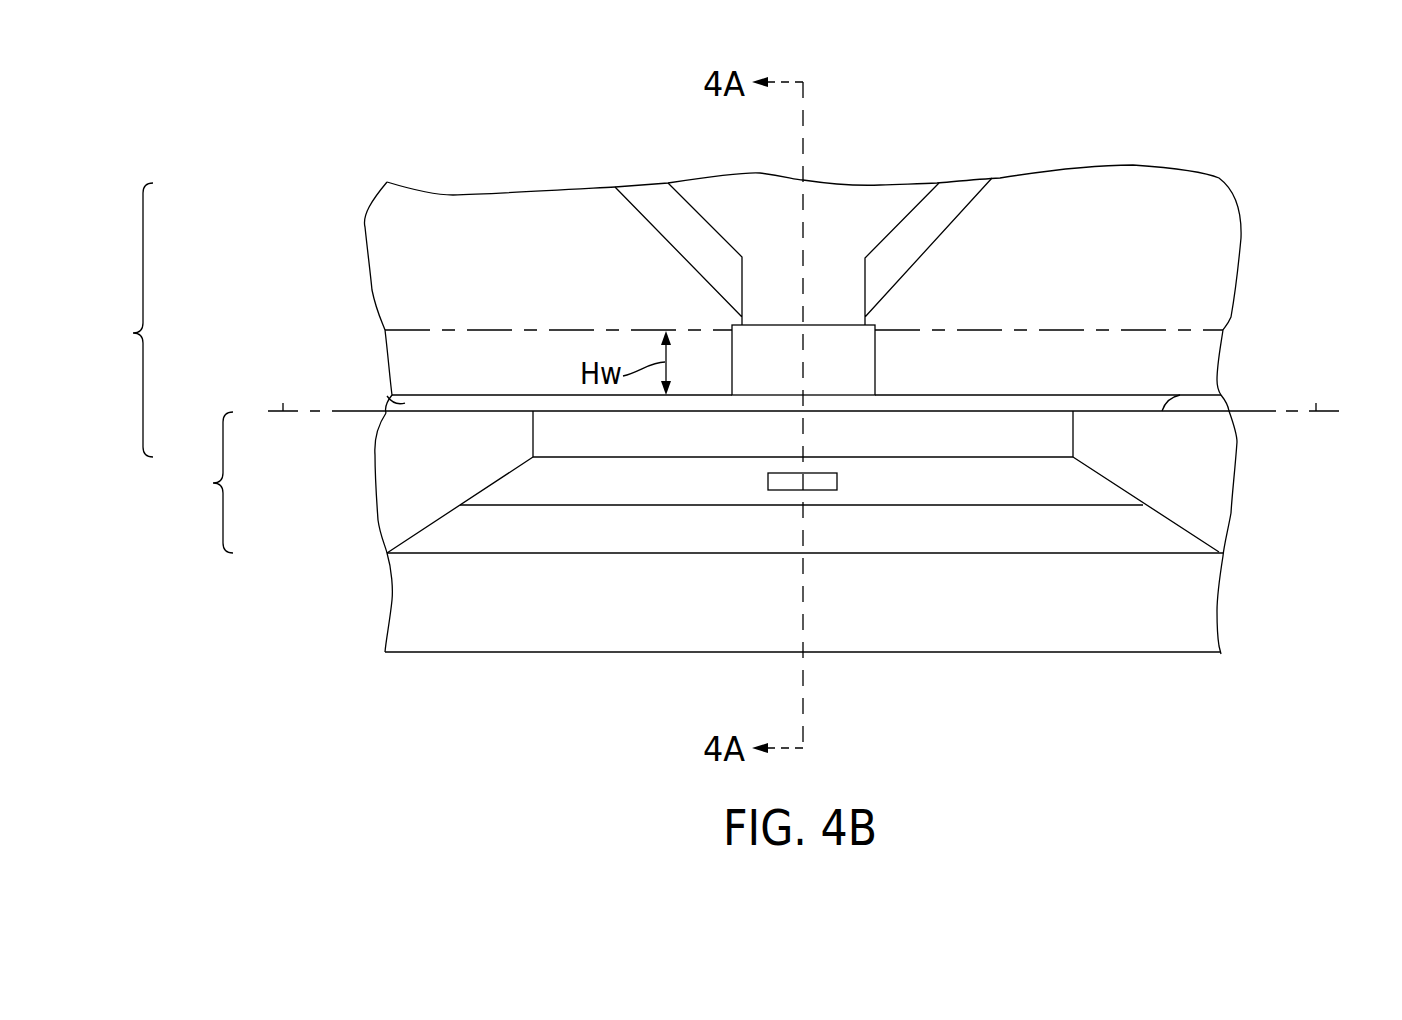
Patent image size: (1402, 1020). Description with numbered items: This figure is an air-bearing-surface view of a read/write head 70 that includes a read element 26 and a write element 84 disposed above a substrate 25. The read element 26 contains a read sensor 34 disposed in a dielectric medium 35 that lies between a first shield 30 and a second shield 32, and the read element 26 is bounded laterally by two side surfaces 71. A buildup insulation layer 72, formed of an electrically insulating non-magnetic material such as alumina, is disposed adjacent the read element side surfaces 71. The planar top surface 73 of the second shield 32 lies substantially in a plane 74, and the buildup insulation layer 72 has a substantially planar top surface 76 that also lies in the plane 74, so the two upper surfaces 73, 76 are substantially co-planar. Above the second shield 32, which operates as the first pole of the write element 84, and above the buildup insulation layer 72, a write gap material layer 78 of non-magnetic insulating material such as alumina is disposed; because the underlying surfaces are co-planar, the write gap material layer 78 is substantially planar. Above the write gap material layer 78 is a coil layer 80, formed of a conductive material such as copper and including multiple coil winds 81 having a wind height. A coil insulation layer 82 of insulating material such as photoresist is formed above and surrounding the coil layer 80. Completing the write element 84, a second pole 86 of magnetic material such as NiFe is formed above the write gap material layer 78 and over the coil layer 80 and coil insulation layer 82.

The read/write head 70 is at (1078, 117).
The write element 84 is at (126, 320).
The read element 26 is at (205, 482).
The coil insulation layer 82 is at (557, 247).
The coil layer 80 is at (462, 310).
The coil winds 81 is at (475, 382).
The second pole 86 is at (858, 375).
The planar top surface of the second shield 73 is at (985, 402).
The write gap material layer 78 is at (398, 398).
The buildup insulation layer top surface 76 is at (1163, 409).
The plane 74 is at (280, 398).
The buildup insulation layer 72 is at (494, 457).
The second shield 32 is at (589, 452).
The dielectric medium 35 is at (564, 500).
The first shield 30 is at (514, 540).
The substrate 25 is at (489, 610).
The side surfaces 71 is at (445, 513).
The read sensor 34 is at (775, 480).